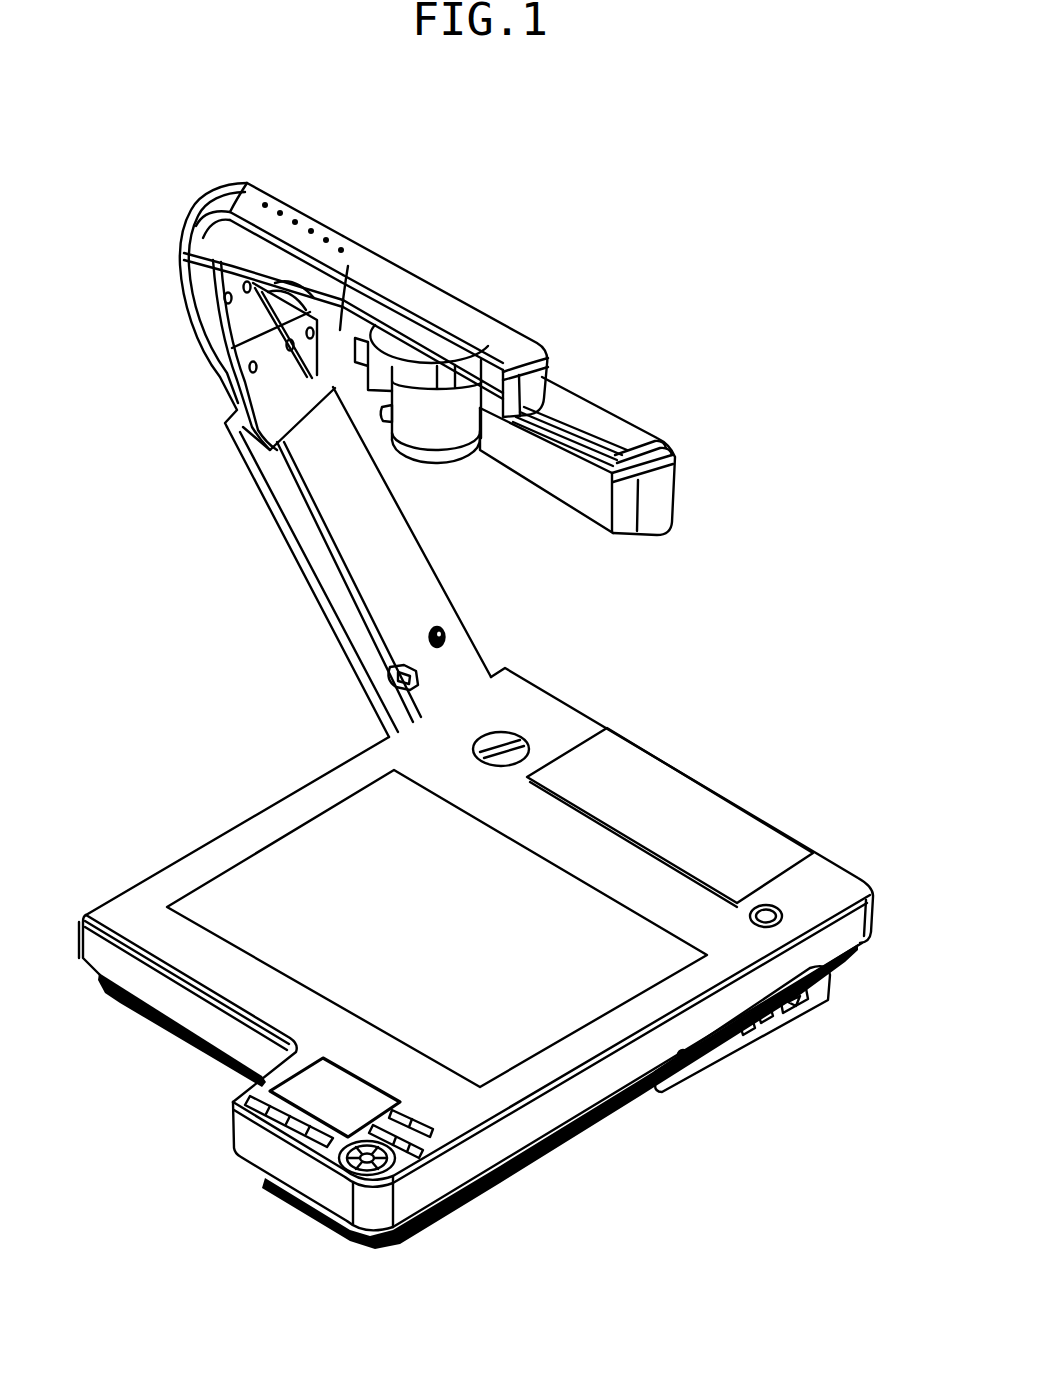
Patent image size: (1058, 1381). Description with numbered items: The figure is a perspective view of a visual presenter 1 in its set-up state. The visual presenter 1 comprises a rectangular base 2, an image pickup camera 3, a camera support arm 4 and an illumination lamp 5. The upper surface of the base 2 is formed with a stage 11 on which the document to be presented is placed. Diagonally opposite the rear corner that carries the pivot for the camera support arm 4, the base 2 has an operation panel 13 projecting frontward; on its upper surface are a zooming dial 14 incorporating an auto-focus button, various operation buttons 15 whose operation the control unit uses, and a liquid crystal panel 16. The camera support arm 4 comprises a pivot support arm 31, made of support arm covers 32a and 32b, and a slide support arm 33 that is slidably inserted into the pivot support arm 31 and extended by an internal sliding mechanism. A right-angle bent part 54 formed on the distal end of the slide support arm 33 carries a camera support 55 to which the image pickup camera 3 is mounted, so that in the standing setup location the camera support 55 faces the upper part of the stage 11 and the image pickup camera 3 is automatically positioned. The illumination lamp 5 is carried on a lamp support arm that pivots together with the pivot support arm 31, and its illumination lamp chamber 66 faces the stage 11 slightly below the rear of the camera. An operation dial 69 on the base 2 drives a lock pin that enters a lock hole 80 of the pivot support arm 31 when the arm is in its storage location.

The visual presenter 1 is at (742, 590).
The base 2 is at (220, 853).
The image pickup camera 3 is at (447, 437).
The camera support arm 4 is at (222, 471).
The illumination lamp 5 is at (689, 443).
The stage 11 is at (442, 931).
The operation panel 13 is at (300, 1140).
The zooming dial 14 is at (350, 1180).
The operation buttons 15 is at (481, 1128).
The liquid crystal panel 16 is at (260, 1108).
The pivot support arm 31 is at (280, 571).
The support arm cover 32a is at (337, 598).
The support arm cover 32b is at (262, 501).
The slide support arm 33 is at (223, 386).
The right-angle bent part 54 is at (192, 222).
The camera support 55 is at (468, 318).
The illumination lamp chamber 66 is at (530, 464).
The operation dial 69 is at (515, 728).
The lock hole 80 is at (447, 633).